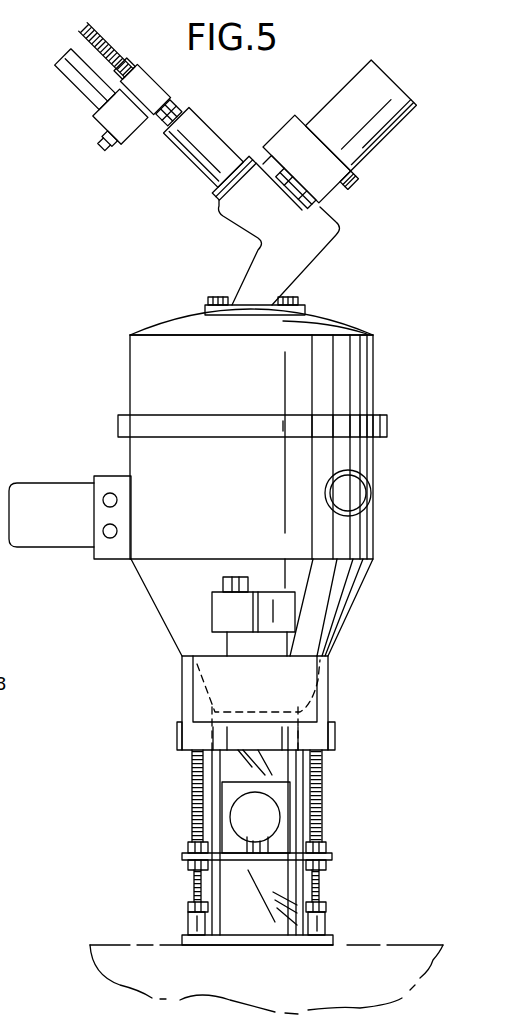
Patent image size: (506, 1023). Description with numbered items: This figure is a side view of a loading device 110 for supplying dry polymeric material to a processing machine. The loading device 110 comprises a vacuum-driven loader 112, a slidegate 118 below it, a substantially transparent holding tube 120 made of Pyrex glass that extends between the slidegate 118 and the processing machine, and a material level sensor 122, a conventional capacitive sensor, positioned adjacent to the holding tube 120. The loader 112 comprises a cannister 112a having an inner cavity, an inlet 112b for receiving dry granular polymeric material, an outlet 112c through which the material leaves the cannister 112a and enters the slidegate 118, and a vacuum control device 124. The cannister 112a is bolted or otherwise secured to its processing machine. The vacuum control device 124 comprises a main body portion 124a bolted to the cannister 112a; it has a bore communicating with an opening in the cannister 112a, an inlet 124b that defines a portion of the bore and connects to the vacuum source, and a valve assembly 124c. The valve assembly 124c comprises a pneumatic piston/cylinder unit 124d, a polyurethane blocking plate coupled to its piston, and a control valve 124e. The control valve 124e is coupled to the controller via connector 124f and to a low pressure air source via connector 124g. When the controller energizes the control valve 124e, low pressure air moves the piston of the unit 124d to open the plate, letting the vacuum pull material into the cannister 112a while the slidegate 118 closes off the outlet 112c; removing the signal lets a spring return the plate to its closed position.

The loading device 110 is at (366, 317).
The vacuum-driven loader 112 is at (384, 378).
The cannister 112a is at (362, 455).
The inlet 112b is at (357, 515).
The outlet 112c is at (313, 697).
The slidegate 118 is at (338, 659).
The holding tube 120 is at (232, 890).
The material level sensor 122 is at (260, 818).
The vacuum control device 124 is at (292, 100).
The main body portion 124a is at (313, 237).
The inlet 124b is at (365, 148).
The valve assembly 124c is at (203, 114).
The pneumatic piston/cylinder unit 124d is at (200, 155).
The control valve 124e is at (141, 80).
The connector 124f is at (88, 80).
The connector 124g is at (86, 37).